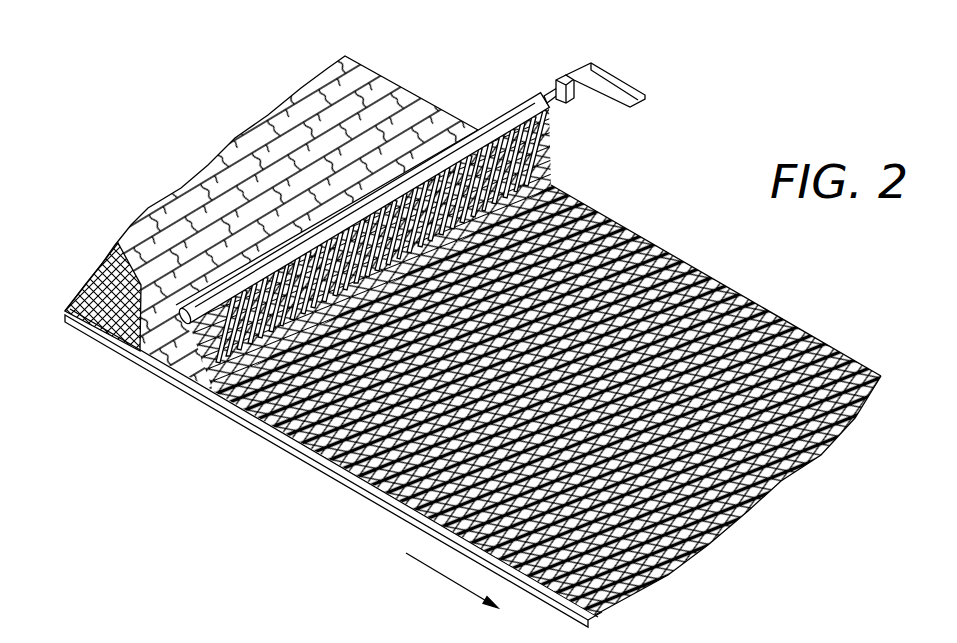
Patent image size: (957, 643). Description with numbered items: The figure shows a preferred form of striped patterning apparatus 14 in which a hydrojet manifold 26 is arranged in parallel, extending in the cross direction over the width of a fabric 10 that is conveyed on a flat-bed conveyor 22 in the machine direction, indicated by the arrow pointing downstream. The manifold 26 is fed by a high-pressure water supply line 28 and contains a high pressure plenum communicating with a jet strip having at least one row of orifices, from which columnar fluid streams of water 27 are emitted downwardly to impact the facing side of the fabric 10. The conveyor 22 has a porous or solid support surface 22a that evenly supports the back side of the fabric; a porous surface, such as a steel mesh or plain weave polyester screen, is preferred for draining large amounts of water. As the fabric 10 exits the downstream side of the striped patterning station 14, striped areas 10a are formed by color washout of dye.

The fabric 10 is at (407, 100).
The striped areas 10a is at (730, 560).
The striped patterning apparatus 14 is at (200, 482).
The flat-bed conveyor 22 is at (155, 363).
The support surface 22a is at (90, 268).
The hydrojet manifold 26 is at (533, 108).
The columnar fluid streams of water 27 is at (533, 157).
The high-pressure water supply line 28 is at (623, 76).